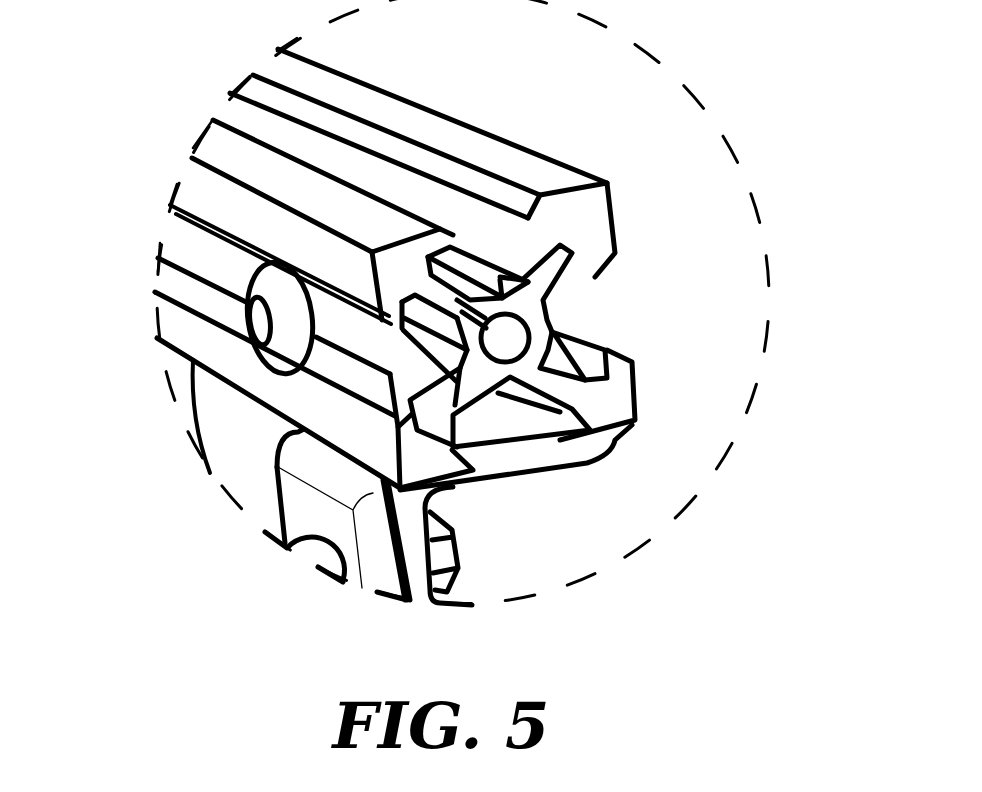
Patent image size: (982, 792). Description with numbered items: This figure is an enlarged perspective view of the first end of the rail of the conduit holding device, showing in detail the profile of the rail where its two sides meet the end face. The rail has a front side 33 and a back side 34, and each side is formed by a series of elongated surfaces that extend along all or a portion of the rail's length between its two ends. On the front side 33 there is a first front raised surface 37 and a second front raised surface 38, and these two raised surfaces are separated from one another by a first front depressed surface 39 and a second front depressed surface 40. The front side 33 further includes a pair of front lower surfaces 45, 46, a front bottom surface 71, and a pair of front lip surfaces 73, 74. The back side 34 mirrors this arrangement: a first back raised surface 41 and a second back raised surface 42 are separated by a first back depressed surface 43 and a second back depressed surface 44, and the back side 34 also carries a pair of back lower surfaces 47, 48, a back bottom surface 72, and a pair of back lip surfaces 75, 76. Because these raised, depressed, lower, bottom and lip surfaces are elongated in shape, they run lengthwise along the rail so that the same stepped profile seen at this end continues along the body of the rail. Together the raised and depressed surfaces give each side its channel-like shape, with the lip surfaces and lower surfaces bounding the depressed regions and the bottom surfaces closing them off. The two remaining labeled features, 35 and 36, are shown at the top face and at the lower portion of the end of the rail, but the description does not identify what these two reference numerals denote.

The front side 33 is at (627, 246).
The back side 34 is at (164, 303).
The top surface of rail 35 is at (376, 102).
The bottom bracket 36 is at (456, 490).
The first front raised surface 37 is at (620, 218).
The second front raised surface 38 is at (641, 400).
The first front depressed surface 39 is at (616, 272).
The second front depressed surface 40 is at (630, 346).
The first back raised surface 41 is at (229, 205).
The second back raised surface 42 is at (188, 333).
The first back depressed surface 43 is at (396, 369).
The second back depressed surface 44 is at (372, 397).
The front lower surface 45 is at (568, 288).
The front lower surface 46 is at (575, 357).
The back lower surface 47 is at (422, 413).
The back lower surface 48 is at (385, 332).
The front bottom surface 71 is at (554, 305).
The back bottom surface 72 is at (194, 228).
The front lip surface 73 is at (567, 252).
The front lip surface 74 is at (580, 460).
The back lip surface 75 is at (417, 294).
The back lip surface 76 is at (446, 322).